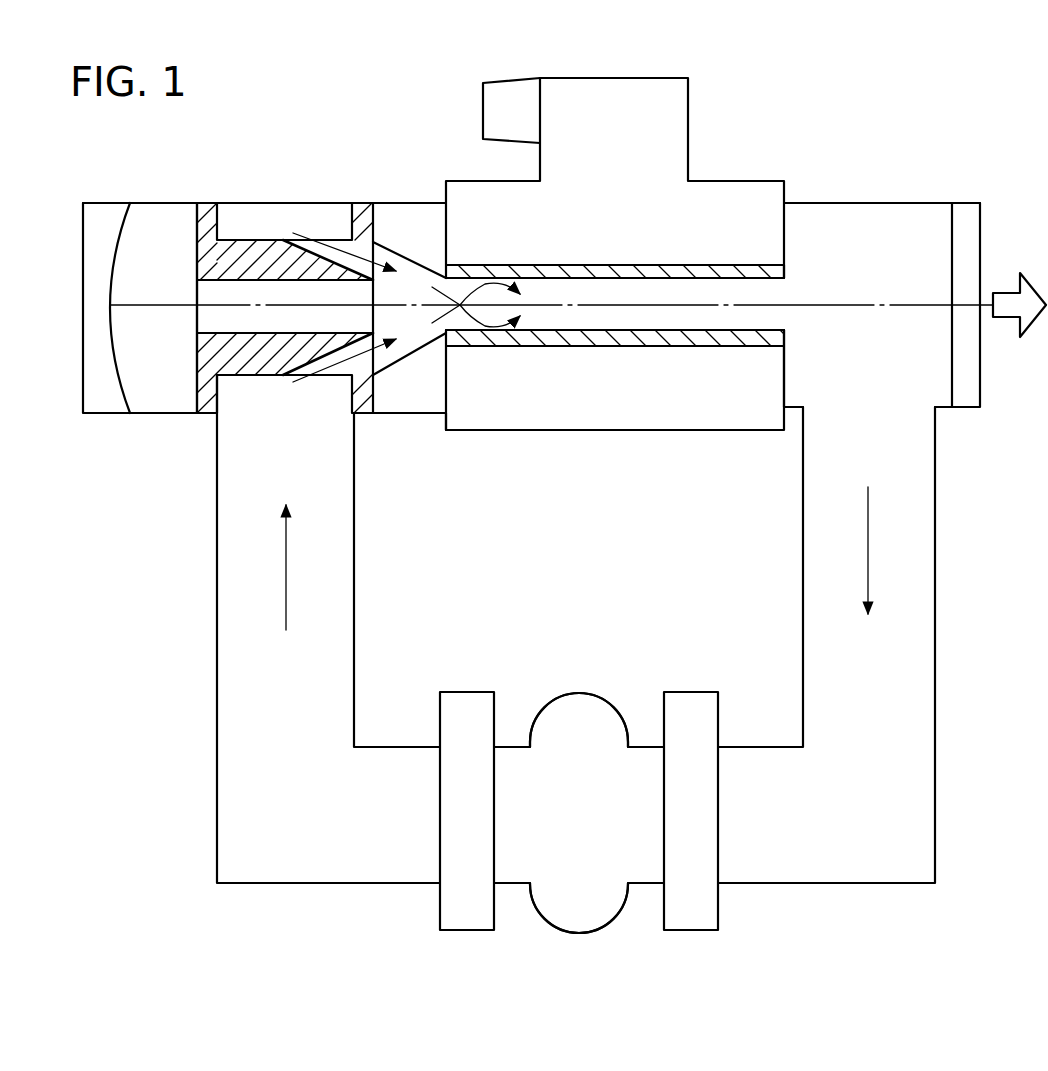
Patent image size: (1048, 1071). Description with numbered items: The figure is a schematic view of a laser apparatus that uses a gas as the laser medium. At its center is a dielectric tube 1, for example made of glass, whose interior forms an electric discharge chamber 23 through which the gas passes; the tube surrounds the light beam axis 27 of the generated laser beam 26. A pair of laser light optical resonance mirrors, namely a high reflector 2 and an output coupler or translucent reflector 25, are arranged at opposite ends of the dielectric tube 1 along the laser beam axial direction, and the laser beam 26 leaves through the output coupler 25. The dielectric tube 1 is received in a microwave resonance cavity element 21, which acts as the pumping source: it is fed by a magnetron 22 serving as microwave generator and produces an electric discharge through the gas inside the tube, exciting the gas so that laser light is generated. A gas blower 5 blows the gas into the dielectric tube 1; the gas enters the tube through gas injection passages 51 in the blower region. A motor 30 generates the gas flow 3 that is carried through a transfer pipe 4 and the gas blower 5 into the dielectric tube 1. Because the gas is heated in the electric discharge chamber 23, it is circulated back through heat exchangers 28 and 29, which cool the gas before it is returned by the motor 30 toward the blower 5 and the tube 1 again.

The dielectric tube 1 is at (555, 264).
The high reflector 2 is at (108, 203).
The gas flow 3 is at (287, 560).
The transfer pipe 4 is at (354, 647).
The gas blower 5 is at (212, 203).
The microwave resonance cavity element 21 is at (715, 192).
The magnetron 22 is at (483, 113).
The electric discharge chamber 23 is at (625, 306).
The output coupler 25 is at (965, 210).
The laser beam 26 is at (1008, 317).
The light beam axis 27 is at (887, 300).
The heat exchanger 28 is at (463, 692).
The heat exchanger 29 is at (690, 692).
The motor 30 is at (578, 692).
The gas injection channels 51 is at (347, 243).